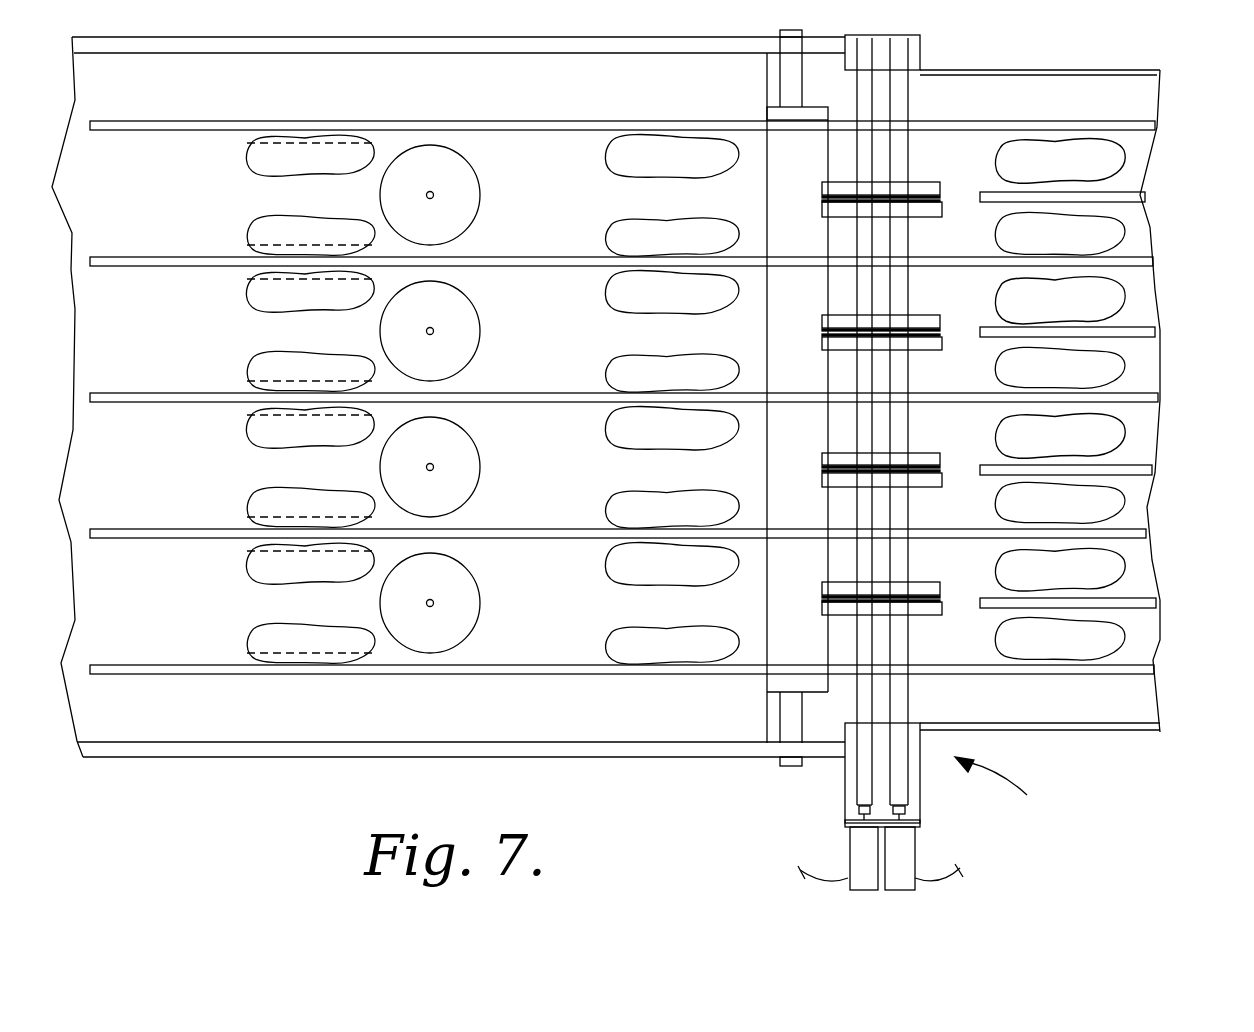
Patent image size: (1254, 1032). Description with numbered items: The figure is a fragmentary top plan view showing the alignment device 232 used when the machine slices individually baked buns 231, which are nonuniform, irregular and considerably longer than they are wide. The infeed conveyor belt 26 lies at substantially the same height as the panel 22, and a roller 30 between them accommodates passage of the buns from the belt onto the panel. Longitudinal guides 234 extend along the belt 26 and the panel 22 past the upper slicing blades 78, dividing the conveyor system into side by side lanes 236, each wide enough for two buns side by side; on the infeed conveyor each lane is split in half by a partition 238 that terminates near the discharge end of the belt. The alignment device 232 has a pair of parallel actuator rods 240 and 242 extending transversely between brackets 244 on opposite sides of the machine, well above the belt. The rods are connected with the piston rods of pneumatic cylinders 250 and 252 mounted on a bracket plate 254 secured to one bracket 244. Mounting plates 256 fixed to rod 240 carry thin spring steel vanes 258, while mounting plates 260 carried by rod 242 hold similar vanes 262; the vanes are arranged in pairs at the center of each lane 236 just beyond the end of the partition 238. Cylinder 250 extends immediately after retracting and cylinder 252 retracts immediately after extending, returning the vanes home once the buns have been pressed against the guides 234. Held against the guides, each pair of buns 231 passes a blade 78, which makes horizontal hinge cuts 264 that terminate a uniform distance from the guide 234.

The panel 22 is at (622, 735).
The conveyor belt 26 is at (1135, 708).
The roller 30 is at (793, 688).
The upper slicing blades 78 is at (470, 200).
The buns 231 is at (305, 222).
The alignment device 232 is at (1015, 782).
The longitudinal guides 234 is at (1148, 125).
The lanes 236 is at (548, 211).
The partition 238 is at (1130, 196).
The actuator rod 240 is at (900, 706).
The actuator rod 242 is at (863, 636).
The brackets 244 is at (915, 58).
The pneumatic cylinder 250 is at (903, 882).
The pneumatic cylinder 252 is at (865, 882).
The bracket plate 254 is at (915, 826).
The mounting plate 256 is at (912, 210).
The vane 258 is at (920, 197).
The mounting plate 260 is at (835, 188).
The vane 262 is at (825, 201).
The hinge cuts 264 is at (272, 143).